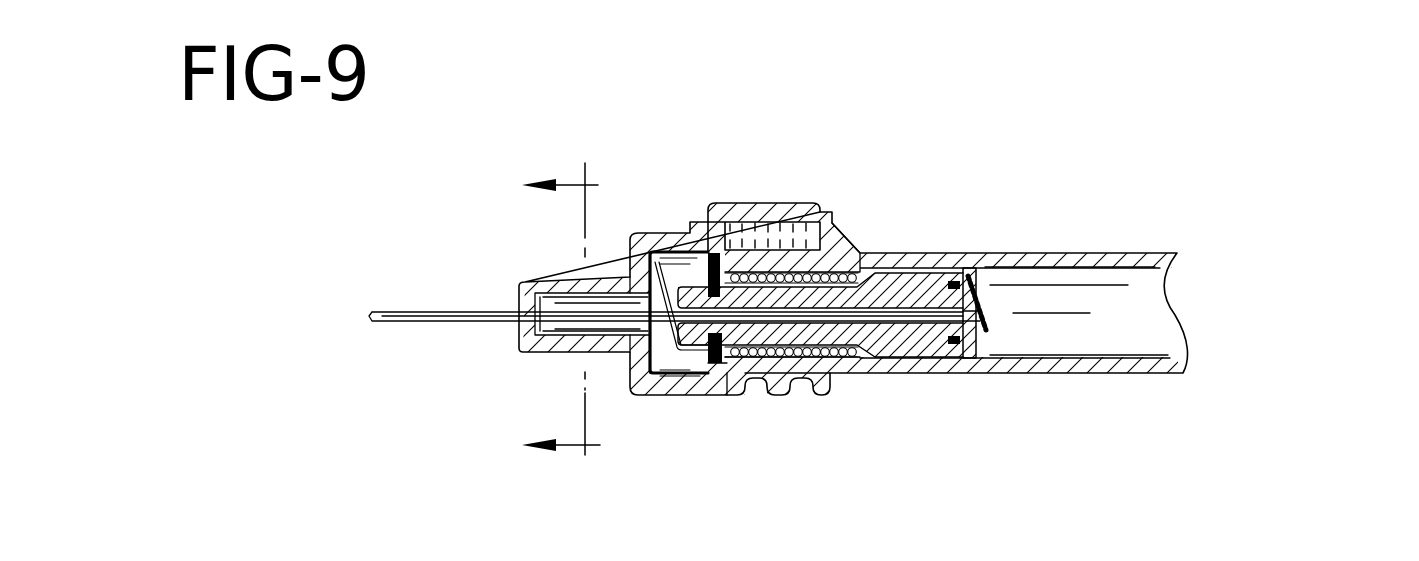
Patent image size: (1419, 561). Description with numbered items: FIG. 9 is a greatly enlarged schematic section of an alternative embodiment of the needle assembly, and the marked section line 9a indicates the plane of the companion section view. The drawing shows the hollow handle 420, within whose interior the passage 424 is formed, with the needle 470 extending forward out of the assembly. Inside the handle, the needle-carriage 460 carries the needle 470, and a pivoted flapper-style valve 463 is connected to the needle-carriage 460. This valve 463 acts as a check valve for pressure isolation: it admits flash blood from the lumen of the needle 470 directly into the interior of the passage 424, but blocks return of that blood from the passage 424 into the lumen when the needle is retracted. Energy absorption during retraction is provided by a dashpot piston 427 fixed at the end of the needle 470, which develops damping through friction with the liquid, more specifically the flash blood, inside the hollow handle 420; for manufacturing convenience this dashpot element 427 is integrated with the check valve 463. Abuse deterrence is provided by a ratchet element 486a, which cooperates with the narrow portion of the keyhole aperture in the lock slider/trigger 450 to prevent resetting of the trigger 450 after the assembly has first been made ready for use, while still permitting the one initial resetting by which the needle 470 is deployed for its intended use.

The hollow handle 420 is at (1217, 215).
The passage 424 is at (1122, 315).
The dashpot piston 427 is at (977, 283).
The lock slider/trigger 450 is at (764, 168).
The needle-carriage 460 is at (913, 258).
The flapper-style valve 463 is at (978, 313).
The needle 470 is at (418, 320).
The ratchet element 486a is at (673, 258).
The section line 9a is at (562, 320).